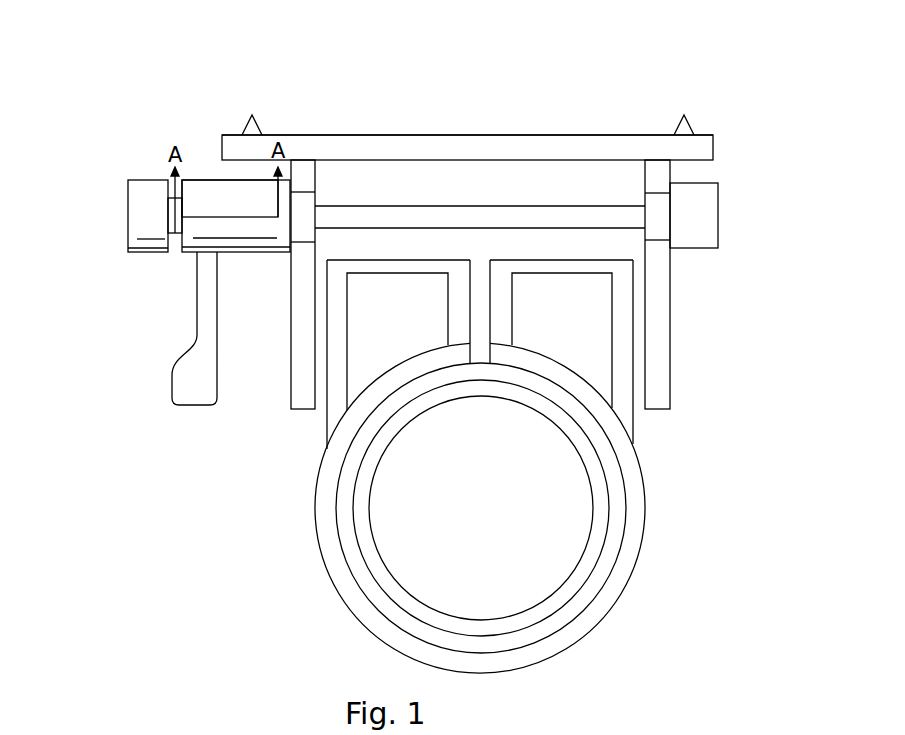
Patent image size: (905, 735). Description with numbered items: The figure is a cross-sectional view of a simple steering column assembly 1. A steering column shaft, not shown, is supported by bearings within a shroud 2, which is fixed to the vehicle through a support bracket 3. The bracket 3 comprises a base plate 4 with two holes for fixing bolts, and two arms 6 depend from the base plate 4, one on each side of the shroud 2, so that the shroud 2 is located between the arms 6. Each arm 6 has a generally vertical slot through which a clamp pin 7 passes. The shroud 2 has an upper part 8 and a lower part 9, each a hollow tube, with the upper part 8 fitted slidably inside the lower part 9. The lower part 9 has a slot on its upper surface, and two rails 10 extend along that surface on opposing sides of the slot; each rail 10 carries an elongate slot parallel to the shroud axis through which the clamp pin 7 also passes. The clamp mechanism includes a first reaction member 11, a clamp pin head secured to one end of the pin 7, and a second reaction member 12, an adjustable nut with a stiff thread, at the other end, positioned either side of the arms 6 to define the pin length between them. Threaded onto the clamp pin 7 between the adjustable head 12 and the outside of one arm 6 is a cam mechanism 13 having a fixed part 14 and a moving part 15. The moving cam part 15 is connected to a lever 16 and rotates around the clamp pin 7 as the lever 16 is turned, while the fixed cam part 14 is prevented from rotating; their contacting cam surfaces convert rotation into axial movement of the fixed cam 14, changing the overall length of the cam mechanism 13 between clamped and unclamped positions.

The steering column assembly 1 is at (489, 339).
The shroud 2 is at (633, 583).
The support bracket 3 is at (316, 127).
The base plate 4 is at (608, 135).
The arm 6 is at (298, 358).
The clamp pin 7 is at (483, 217).
The upper part 8 is at (600, 508).
The lower part 9 is at (350, 588).
The rail 10 is at (377, 347).
The first reaction member 11 is at (707, 203).
The second reaction member 12 is at (142, 212).
The cam mechanism 13 is at (176, 254).
The fixed cam part 14 is at (270, 238).
The moving cam part 15 is at (204, 190).
The lever 16 is at (188, 373).